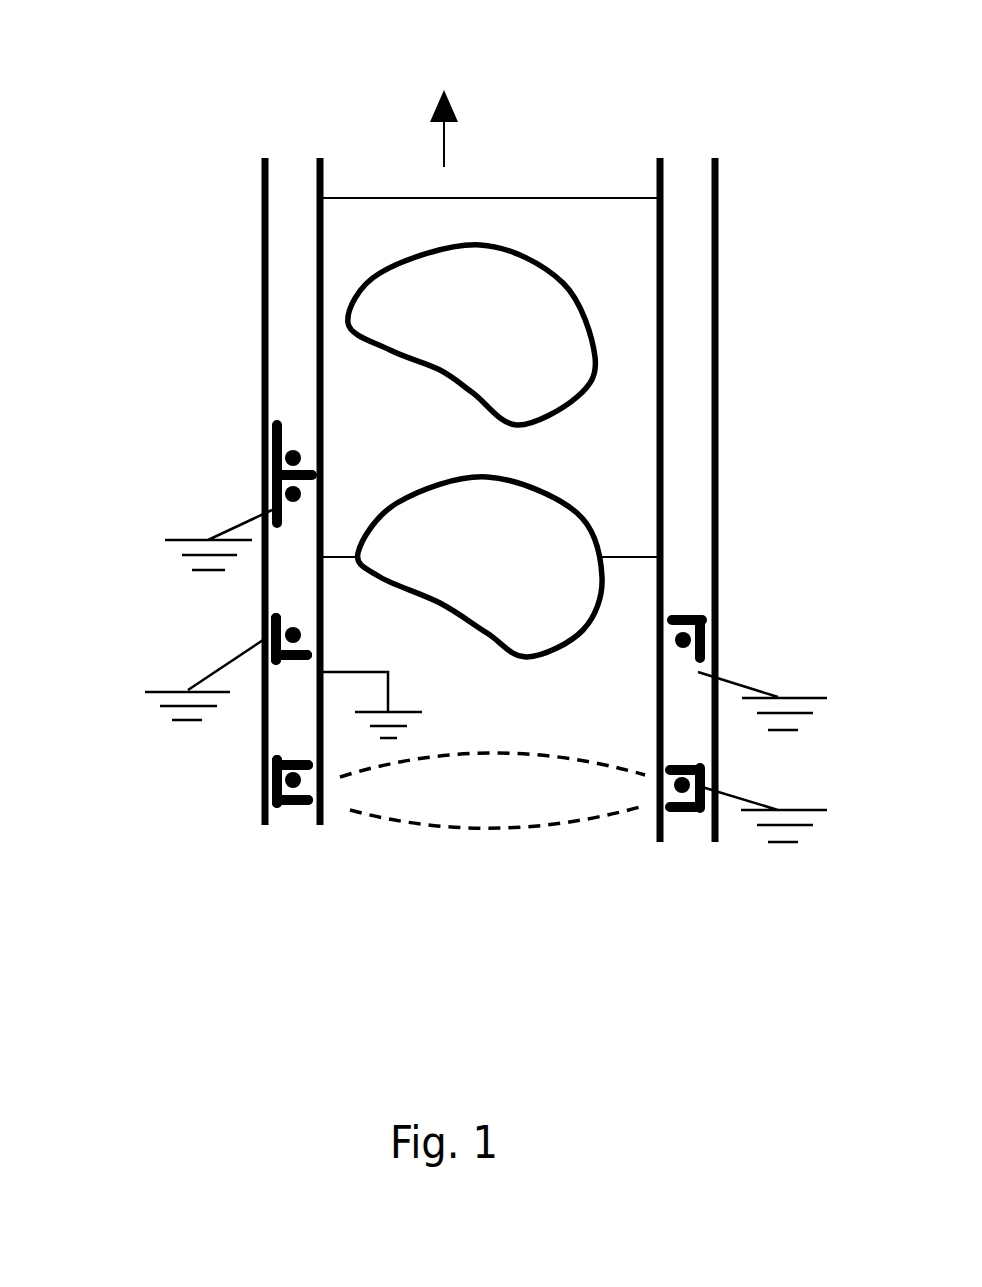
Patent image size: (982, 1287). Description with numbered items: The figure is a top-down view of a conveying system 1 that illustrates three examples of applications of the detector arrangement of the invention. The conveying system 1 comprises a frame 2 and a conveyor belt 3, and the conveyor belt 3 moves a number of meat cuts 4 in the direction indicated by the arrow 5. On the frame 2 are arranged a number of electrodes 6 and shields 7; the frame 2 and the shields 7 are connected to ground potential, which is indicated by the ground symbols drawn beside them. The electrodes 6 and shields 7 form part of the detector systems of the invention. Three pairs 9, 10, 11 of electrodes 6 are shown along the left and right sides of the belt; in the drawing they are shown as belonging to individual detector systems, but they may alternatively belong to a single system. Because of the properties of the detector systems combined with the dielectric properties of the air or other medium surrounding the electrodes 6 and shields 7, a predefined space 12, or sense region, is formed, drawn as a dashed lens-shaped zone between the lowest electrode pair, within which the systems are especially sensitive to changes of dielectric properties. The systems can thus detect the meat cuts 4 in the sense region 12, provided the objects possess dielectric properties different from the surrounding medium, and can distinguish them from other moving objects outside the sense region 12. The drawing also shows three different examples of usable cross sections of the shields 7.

The conveying system 1 is at (213, 137).
The frame 2 is at (290, 213).
The conveyor belt 3 is at (593, 195).
The meat cuts 4 is at (455, 512).
The arrow 5 is at (467, 115).
The electrodes 6 is at (300, 493).
The shields 7 is at (272, 442).
The first pair of electrodes 9 is at (435, 658).
The second pair of electrodes 10 is at (230, 641).
The third pair of electrodes 11 is at (230, 790).
The predefined space 12 is at (490, 792).